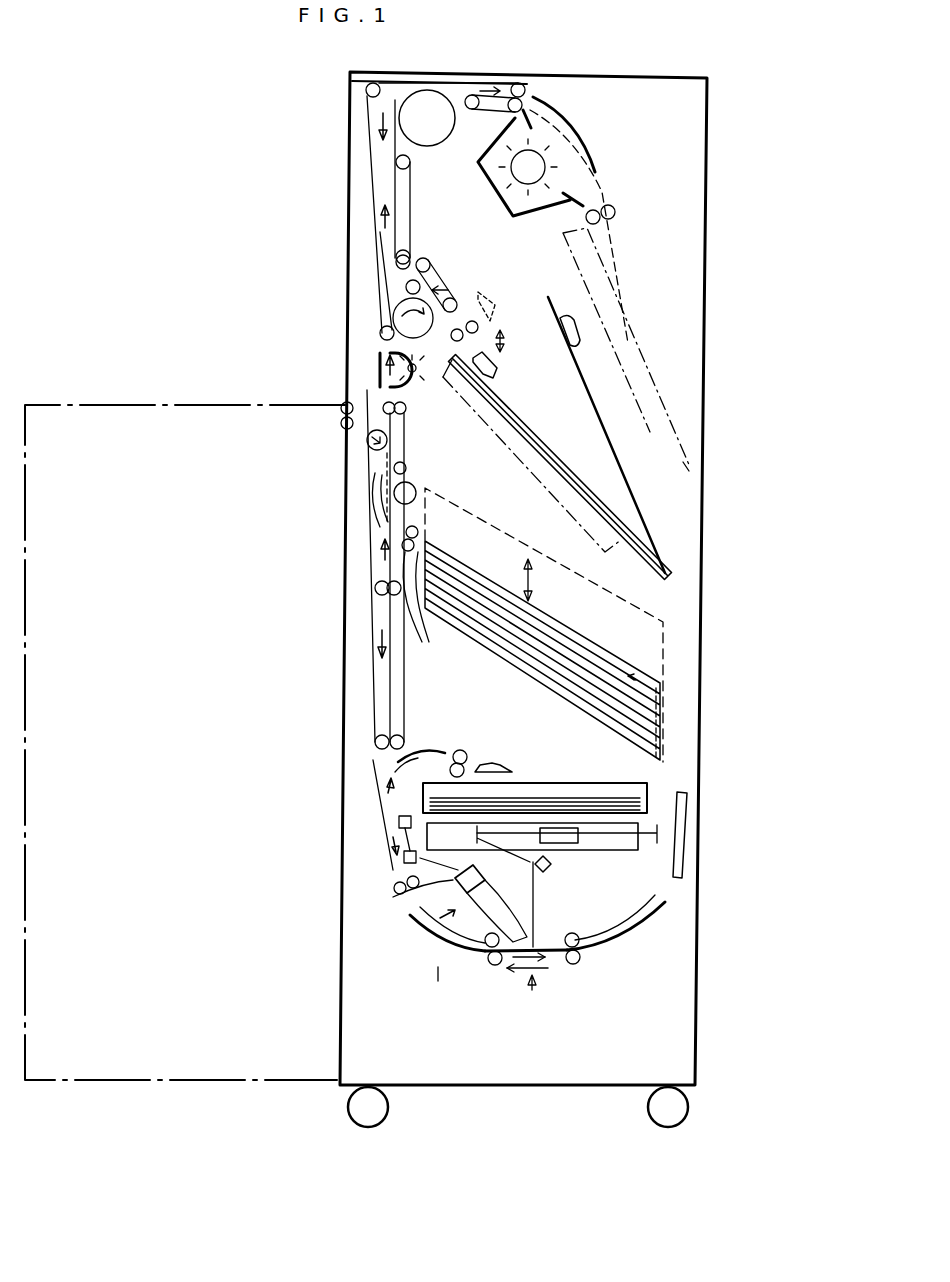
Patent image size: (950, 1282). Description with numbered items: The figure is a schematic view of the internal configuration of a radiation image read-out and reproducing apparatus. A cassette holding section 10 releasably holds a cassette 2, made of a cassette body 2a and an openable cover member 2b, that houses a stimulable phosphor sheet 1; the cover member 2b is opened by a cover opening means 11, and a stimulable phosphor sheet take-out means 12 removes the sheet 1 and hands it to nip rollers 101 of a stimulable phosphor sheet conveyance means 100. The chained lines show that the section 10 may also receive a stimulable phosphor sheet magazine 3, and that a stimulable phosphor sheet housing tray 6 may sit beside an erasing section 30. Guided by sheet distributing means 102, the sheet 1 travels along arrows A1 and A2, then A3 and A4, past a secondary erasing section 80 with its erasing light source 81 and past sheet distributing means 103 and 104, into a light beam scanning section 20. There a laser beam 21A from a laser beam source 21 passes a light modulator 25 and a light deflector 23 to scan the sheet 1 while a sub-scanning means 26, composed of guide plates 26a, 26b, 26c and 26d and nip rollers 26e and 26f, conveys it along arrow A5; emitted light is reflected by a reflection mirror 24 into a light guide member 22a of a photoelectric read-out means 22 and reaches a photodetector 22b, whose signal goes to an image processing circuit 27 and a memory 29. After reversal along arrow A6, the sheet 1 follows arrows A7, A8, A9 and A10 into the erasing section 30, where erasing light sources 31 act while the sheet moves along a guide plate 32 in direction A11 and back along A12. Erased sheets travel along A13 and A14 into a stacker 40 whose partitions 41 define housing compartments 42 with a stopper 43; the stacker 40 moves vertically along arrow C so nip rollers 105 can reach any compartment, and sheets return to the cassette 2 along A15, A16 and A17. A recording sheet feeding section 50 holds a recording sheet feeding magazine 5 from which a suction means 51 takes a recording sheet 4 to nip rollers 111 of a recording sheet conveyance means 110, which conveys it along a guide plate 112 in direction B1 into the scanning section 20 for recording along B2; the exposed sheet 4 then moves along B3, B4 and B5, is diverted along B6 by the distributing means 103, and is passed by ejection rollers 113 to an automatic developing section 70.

The stimulable phosphor sheet 1 is at (623, 267).
The cassette 2 is at (668, 576).
The cassette body 2a is at (627, 555).
The cover member 2b is at (660, 546).
The stimulable phosphor sheet magazine 3 is at (497, 443).
The recording sheet 4 is at (550, 800).
The recording sheet feeding magazine 5 is at (690, 784).
The stimulable phosphor sheet housing tray 6 is at (690, 471).
The cassette holding section 10 is at (671, 520).
The cover opening means 11 is at (562, 330).
The stimulable phosphor sheet take-out means 12 is at (500, 372).
The light beam scanning section 20 is at (556, 966).
The He-Ne laser beam source 21 is at (544, 885).
The laser beam 21A is at (588, 930).
The photoelectric read-out means 22 is at (433, 927).
The light guide member 22a is at (473, 937).
The photodetector 22b is at (460, 882).
The light deflector 23 is at (545, 867).
The reflection mirror 24 is at (540, 935).
The light modulator 25 is at (580, 843).
The sub-scanning means 26 is at (531, 992).
The guide plate 26a is at (472, 957).
The guide plate 26b is at (551, 962).
The guide plate 26c is at (590, 950).
The guide plate 26d is at (686, 833).
The nip rollers 26e is at (490, 958).
The nip rollers 26f is at (572, 958).
The image processing circuit 27 is at (398, 857).
The memory 29 is at (395, 822).
The erasing section 30 is at (588, 82).
The erasing light sources 31 is at (527, 205).
The guide plate 32 is at (594, 170).
The stacker 40 is at (590, 625).
The partitions 41 is at (557, 634).
The stimulable phosphor sheet housing compartments 42 is at (590, 652).
The stopper 43 is at (664, 697).
The recording sheet feeding section 50 is at (585, 774).
The suction means 51 is at (514, 768).
The automatic developing section 70 is at (212, 646).
The secondary erasing section 80 is at (370, 390).
The erasing light source 81 is at (467, 408).
The stimulable phosphor sheet conveyance means 100 is at (312, 507).
The nip rollers 101 is at (462, 320).
The sheet distributing means 102 is at (368, 262).
The sheet distributing means 103 is at (368, 446).
The sheet distributing means 104 is at (378, 493).
The nip rollers 105 is at (422, 609).
The recording sheet conveyance means 110 is at (474, 727).
The nip rollers 111 is at (466, 758).
The guide plate 112 is at (433, 748).
The ejection rollers 113 is at (343, 413).
The arrow A1 is at (442, 285).
The arrow A2 is at (390, 307).
The arrow A3 is at (380, 634).
The arrow A4 is at (395, 838).
The arrow A5 is at (588, 1008).
The arrow A6 is at (511, 1026).
The arrow A7 is at (386, 798).
The arrow A8 is at (380, 560).
The arrow A9 is at (383, 220).
The arrow A10 is at (497, 85).
The arrow A11 is at (577, 126).
The arrow A12 is at (593, 142).
The arrow A13 is at (392, 103).
The arrow A14 is at (416, 463).
The arrow A15 is at (394, 517).
The arrow A16 is at (388, 377).
The arrow A17 is at (380, 332).
The arrow B1 is at (428, 728).
The arrow B2 is at (555, 965).
The arrow B3 is at (523, 978).
The arrow B4 is at (314, 774).
The arrow B5 is at (317, 550).
The arrow B6 is at (407, 433).
The arrow C is at (537, 580).